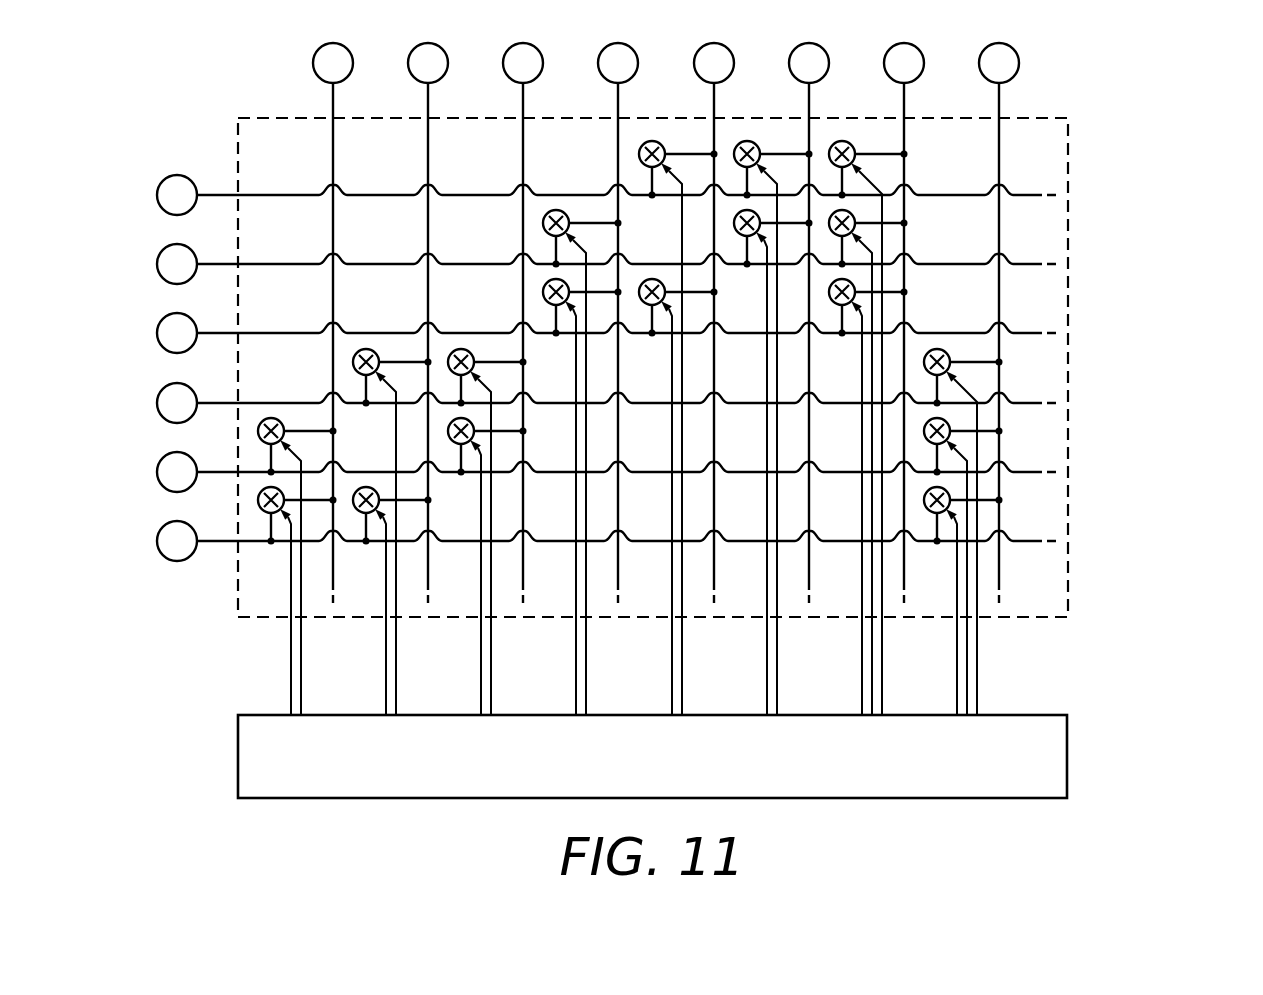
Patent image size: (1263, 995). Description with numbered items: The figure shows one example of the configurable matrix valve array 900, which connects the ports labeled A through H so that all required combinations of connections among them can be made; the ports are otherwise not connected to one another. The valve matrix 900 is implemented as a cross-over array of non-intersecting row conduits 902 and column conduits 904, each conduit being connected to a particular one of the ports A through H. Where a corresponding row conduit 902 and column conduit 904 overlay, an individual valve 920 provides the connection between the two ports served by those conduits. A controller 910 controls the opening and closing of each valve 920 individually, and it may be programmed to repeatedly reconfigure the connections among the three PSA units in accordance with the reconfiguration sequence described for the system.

The configurable matrix valve array 900 is at (1078, 150).
The row conduits 902 is at (270, 194).
The column conduits 904 is at (427, 169).
The controller 910 is at (1050, 738).
The valves 920 is at (270, 417).